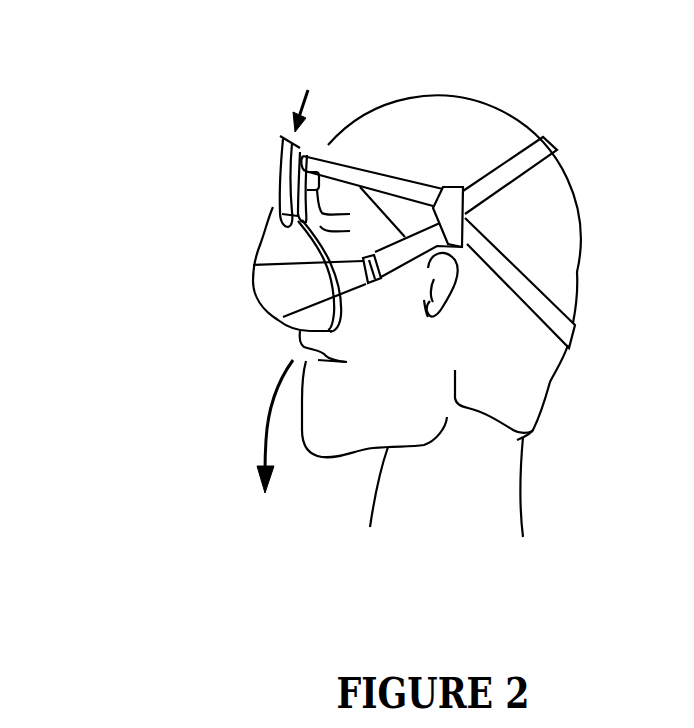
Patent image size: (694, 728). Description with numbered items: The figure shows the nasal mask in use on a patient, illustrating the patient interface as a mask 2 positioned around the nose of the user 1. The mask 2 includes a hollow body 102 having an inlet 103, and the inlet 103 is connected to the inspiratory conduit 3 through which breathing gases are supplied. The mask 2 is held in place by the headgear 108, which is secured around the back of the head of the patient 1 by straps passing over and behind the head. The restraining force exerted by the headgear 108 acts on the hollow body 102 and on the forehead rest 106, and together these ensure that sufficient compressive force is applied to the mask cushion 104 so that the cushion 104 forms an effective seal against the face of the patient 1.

The user 1 is at (577, 247).
The mask 2 is at (207, 202).
The inspiratory conduit 3 is at (278, 165).
The hollow body 102 is at (252, 259).
The inlet 103 is at (273, 217).
The mask cushion 104 is at (292, 210).
The forehead rest 106 is at (373, 246).
The headgear 108 is at (530, 157).